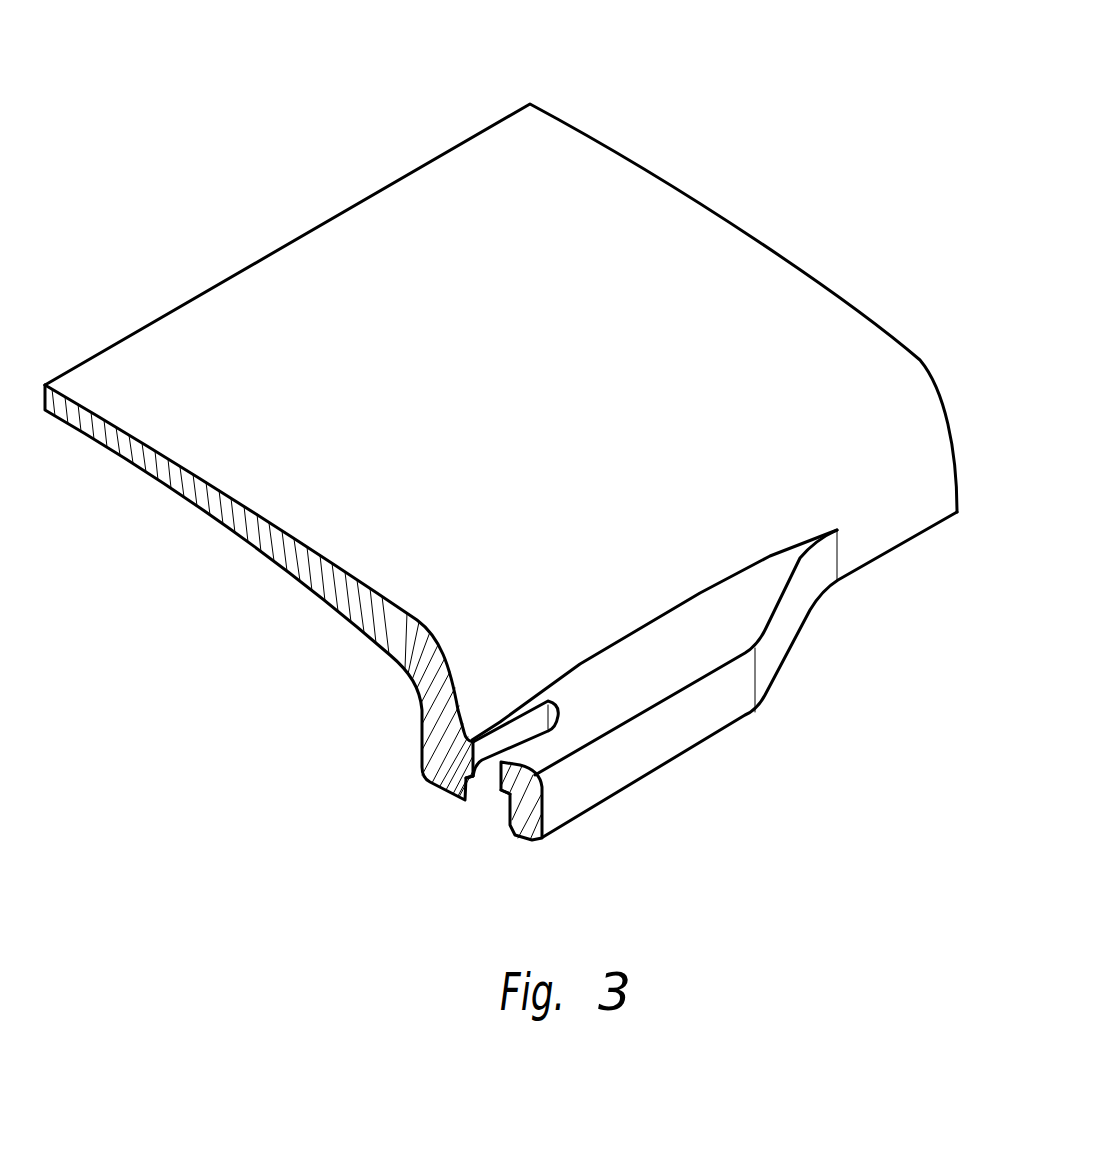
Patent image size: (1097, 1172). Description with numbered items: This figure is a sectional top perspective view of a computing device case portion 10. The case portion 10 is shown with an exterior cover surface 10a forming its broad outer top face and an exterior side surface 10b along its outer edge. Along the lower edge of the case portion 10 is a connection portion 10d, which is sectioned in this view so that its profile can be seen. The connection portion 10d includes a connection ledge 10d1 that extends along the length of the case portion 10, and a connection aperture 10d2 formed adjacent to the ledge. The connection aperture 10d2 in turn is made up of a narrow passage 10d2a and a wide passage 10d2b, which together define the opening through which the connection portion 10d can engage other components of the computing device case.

The computing device case portion 10 is at (712, 61).
The exterior cover surface 10a is at (375, 232).
The exterior side surface 10b is at (897, 522).
The connection portion 10d is at (668, 866).
The connection ledge 10d1 is at (712, 717).
The connection aperture 10d2 is at (450, 826).
The narrow passage 10d2a is at (492, 752).
The wide passage 10d2b is at (478, 798).